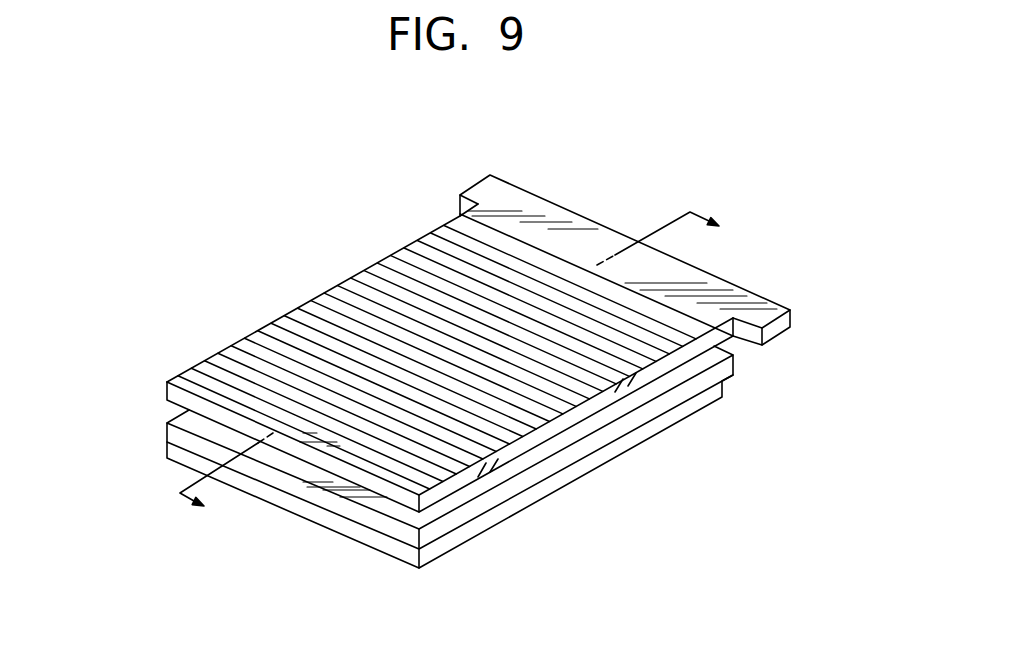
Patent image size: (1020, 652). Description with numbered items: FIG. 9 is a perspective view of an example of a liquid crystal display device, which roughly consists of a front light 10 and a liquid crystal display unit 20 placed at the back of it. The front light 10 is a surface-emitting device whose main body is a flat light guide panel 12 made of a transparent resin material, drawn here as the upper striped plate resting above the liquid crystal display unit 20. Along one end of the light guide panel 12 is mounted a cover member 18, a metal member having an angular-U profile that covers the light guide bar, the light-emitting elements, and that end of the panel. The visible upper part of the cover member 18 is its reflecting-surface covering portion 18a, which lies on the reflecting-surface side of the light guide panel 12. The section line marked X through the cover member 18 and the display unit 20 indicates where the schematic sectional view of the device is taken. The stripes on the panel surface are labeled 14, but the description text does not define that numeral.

The front light 10 is at (171, 366).
The light guide panel 12 is at (425, 233).
The grooves 14 is at (378, 333).
The cover member 18 is at (546, 189).
The reflecting-surface covering portion 18a is at (605, 238).
The liquid crystal display unit 20 is at (583, 458).